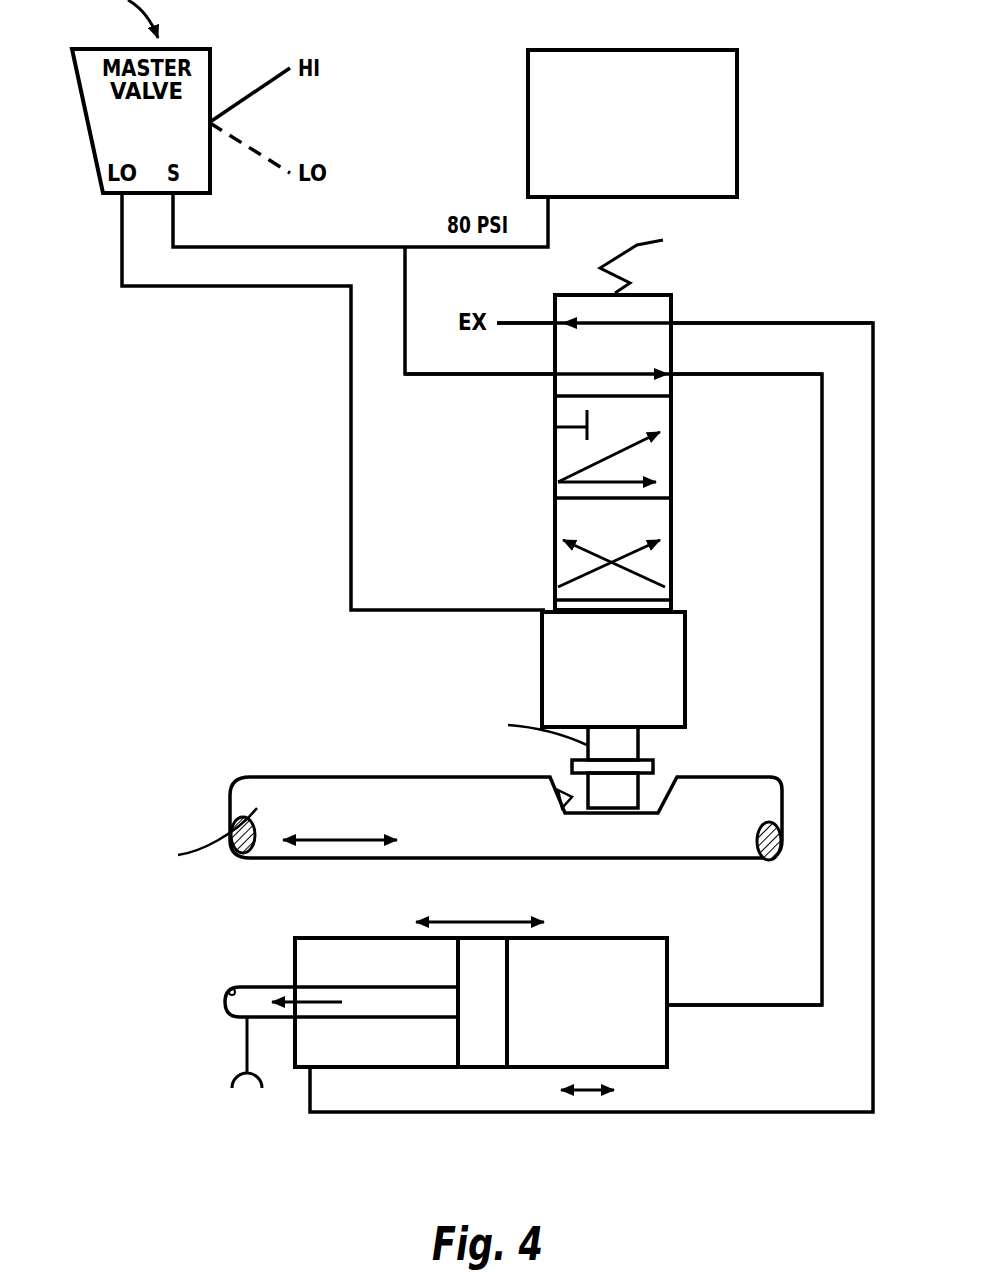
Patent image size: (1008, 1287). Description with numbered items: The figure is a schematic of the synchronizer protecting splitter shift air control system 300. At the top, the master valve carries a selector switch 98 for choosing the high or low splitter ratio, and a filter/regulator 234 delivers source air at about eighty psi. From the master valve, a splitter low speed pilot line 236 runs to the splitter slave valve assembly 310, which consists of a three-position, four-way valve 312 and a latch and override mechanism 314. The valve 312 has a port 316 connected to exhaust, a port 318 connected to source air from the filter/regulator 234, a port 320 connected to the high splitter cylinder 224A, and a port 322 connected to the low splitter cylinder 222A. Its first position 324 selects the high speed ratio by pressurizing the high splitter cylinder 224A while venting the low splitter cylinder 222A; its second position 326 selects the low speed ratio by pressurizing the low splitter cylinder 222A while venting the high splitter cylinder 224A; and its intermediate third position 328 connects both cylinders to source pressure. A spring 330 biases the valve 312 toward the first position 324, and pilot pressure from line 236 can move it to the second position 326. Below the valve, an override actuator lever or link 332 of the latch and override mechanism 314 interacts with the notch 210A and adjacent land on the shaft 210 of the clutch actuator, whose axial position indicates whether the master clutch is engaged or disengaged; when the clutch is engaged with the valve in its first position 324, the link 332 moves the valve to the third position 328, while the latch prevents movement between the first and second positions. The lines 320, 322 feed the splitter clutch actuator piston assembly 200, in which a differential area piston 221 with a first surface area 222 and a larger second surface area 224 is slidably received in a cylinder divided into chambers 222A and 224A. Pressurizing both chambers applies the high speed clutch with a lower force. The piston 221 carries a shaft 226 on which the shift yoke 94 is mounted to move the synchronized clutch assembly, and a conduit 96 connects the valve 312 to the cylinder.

The selector switch 98 is at (250, 98).
The filter/regulator 234 is at (665, 50).
The splitter shift air control system 300 is at (790, 206).
The splitter low speed pilot line 236 is at (348, 498).
The three-position, four-way valve 312 is at (520, 416).
The splitter slave valve assembly 310 is at (520, 557).
The first position 324 is at (630, 358).
The third position 328 is at (630, 425).
The second position 326 is at (630, 536).
The exhaust port 316 is at (554, 320).
The source port 318 is at (554, 373).
The low splitter port 322 is at (673, 318).
The high splitter port 320 is at (673, 378).
The spring 330 is at (654, 258).
The latch and override mechanism 314 is at (542, 648).
The override actuator lever 332 is at (623, 745).
The shaft 210 is at (267, 790).
The notch 210A is at (563, 813).
The splitter clutch actuator piston assembly 200 is at (496, 1038).
The pneumatic line 96 is at (712, 975).
The first surface area 222 is at (455, 1043).
The differential area piston 221 is at (483, 1005).
The second surface area 224 is at (508, 962).
The low splitter cylinder 222A is at (377, 966).
The high splitter cylinder 224A is at (628, 1050).
The shaft 226 is at (382, 1003).
The shift yoke 94 is at (247, 1048).